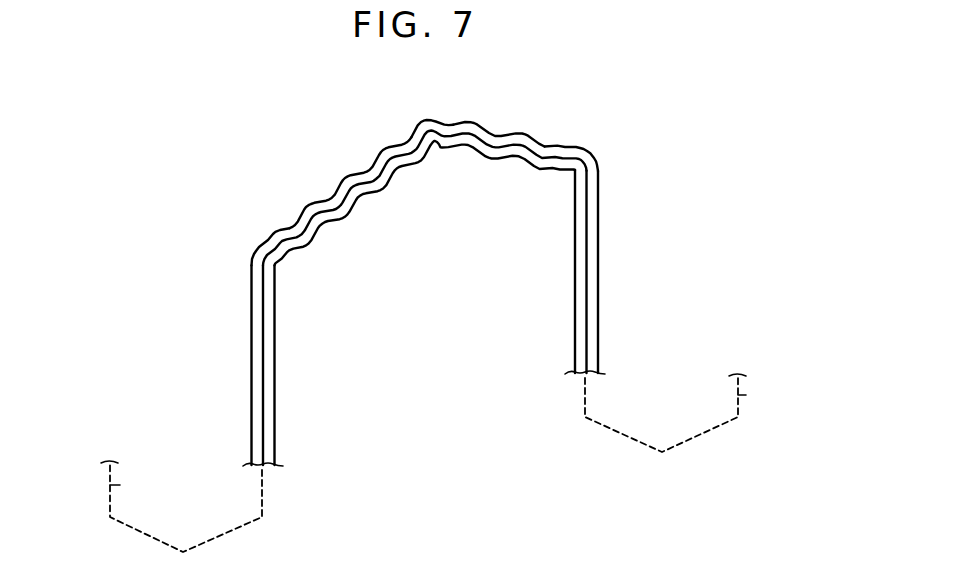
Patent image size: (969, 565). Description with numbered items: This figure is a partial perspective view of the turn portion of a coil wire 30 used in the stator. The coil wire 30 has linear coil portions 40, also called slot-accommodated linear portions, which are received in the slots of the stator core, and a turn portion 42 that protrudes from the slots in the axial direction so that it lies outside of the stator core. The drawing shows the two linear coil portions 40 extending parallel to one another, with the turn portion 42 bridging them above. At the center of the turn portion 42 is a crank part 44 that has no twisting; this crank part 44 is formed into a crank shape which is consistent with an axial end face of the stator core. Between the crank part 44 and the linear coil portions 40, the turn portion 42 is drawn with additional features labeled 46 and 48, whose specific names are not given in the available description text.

The coil wire 30 is at (423, 313).
The linear coil portion 40 is at (253, 362).
The turn portion 42 is at (348, 203).
The crank part 44 is at (418, 122).
The shoulder portion 46 is at (279, 235).
The corrugation 48 is at (317, 202).